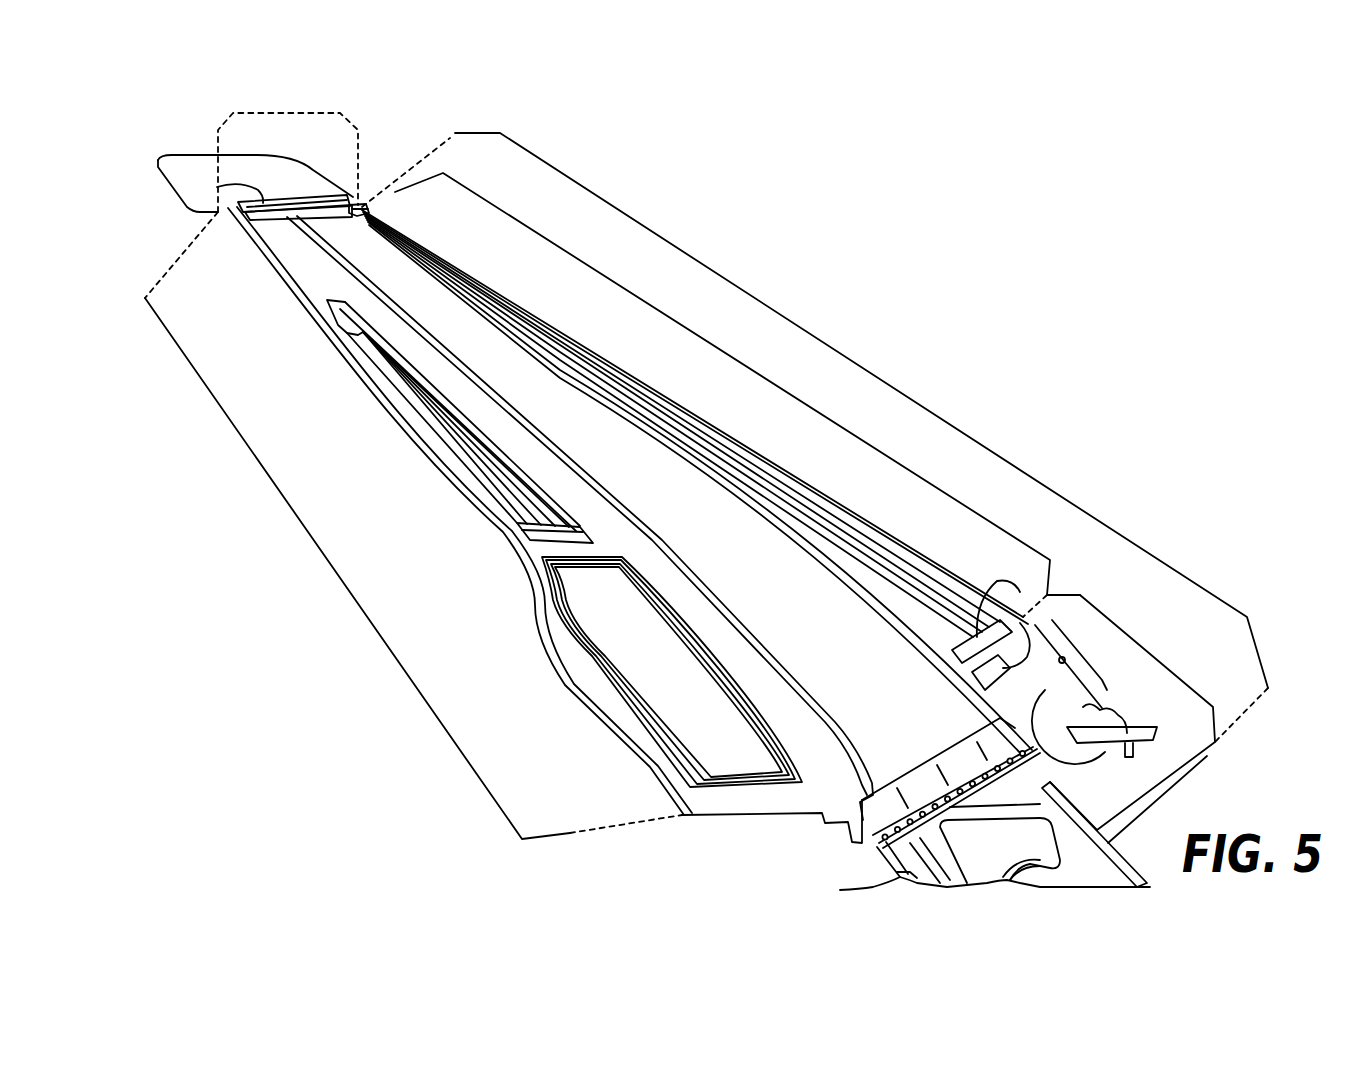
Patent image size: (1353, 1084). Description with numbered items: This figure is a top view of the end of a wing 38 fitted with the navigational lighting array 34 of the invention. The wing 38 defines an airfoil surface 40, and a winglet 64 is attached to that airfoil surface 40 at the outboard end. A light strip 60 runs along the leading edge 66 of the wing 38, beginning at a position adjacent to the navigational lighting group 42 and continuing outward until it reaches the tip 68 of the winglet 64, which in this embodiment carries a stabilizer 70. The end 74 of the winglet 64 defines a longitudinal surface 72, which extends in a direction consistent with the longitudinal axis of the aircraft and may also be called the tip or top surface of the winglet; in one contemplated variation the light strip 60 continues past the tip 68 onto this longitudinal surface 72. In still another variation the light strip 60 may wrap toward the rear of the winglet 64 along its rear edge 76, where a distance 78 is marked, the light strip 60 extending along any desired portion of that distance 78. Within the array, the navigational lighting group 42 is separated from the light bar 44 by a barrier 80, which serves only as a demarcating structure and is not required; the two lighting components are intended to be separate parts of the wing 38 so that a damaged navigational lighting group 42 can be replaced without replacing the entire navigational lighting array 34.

The navigational lighting array 34 is at (967, 437).
The wing 38 is at (673, 873).
The airfoil surface 40 is at (910, 868).
The navigational lighting group 42 is at (1138, 643).
The light bar 44 is at (840, 426).
The light strip 60 is at (913, 555).
The winglet 64 is at (518, 507).
The leading edge 66 is at (830, 500).
The tip 68 is at (377, 198).
The stabilizer 70 is at (300, 173).
The longitudinal surface 72 is at (300, 113).
The end 74 is at (217, 187).
The rear edge 76 is at (375, 385).
The distance 78 is at (279, 493).
The barrier 80 is at (980, 627).